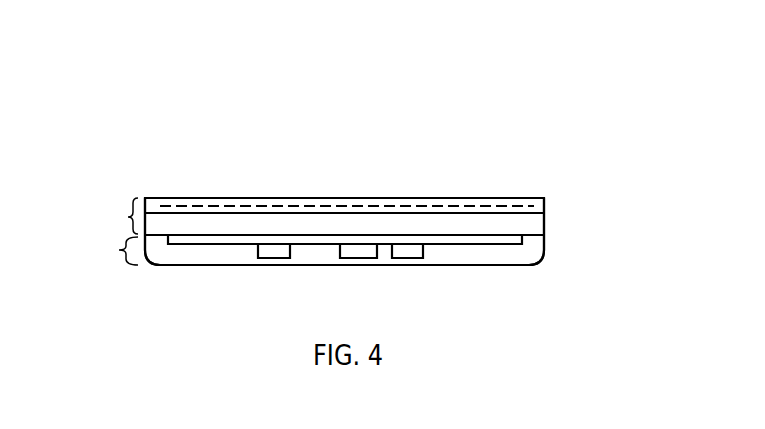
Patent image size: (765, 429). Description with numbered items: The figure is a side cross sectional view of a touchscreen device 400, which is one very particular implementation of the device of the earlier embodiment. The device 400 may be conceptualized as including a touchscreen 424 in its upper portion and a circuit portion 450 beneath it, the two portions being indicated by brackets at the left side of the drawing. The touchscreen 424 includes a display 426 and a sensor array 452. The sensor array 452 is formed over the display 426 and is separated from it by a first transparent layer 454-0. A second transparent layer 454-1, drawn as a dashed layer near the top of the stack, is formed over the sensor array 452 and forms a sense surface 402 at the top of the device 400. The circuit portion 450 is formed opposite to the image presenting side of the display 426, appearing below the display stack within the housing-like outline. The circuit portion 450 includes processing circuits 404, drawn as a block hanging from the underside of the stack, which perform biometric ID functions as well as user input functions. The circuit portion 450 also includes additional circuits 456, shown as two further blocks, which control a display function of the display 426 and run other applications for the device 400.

The device 400 is at (458, 122).
The sense surface 402 is at (344, 198).
The processing circuits 404 is at (258, 251).
The touchscreen 424 is at (109, 216).
The display 426 is at (545, 248).
The circuit portion 450 is at (109, 251).
The sensor array 452 is at (514, 211).
The second transparent layer 454-1 is at (506, 202).
The first transparent layer 454-0 is at (518, 226).
The additional circuits 456 is at (370, 249).